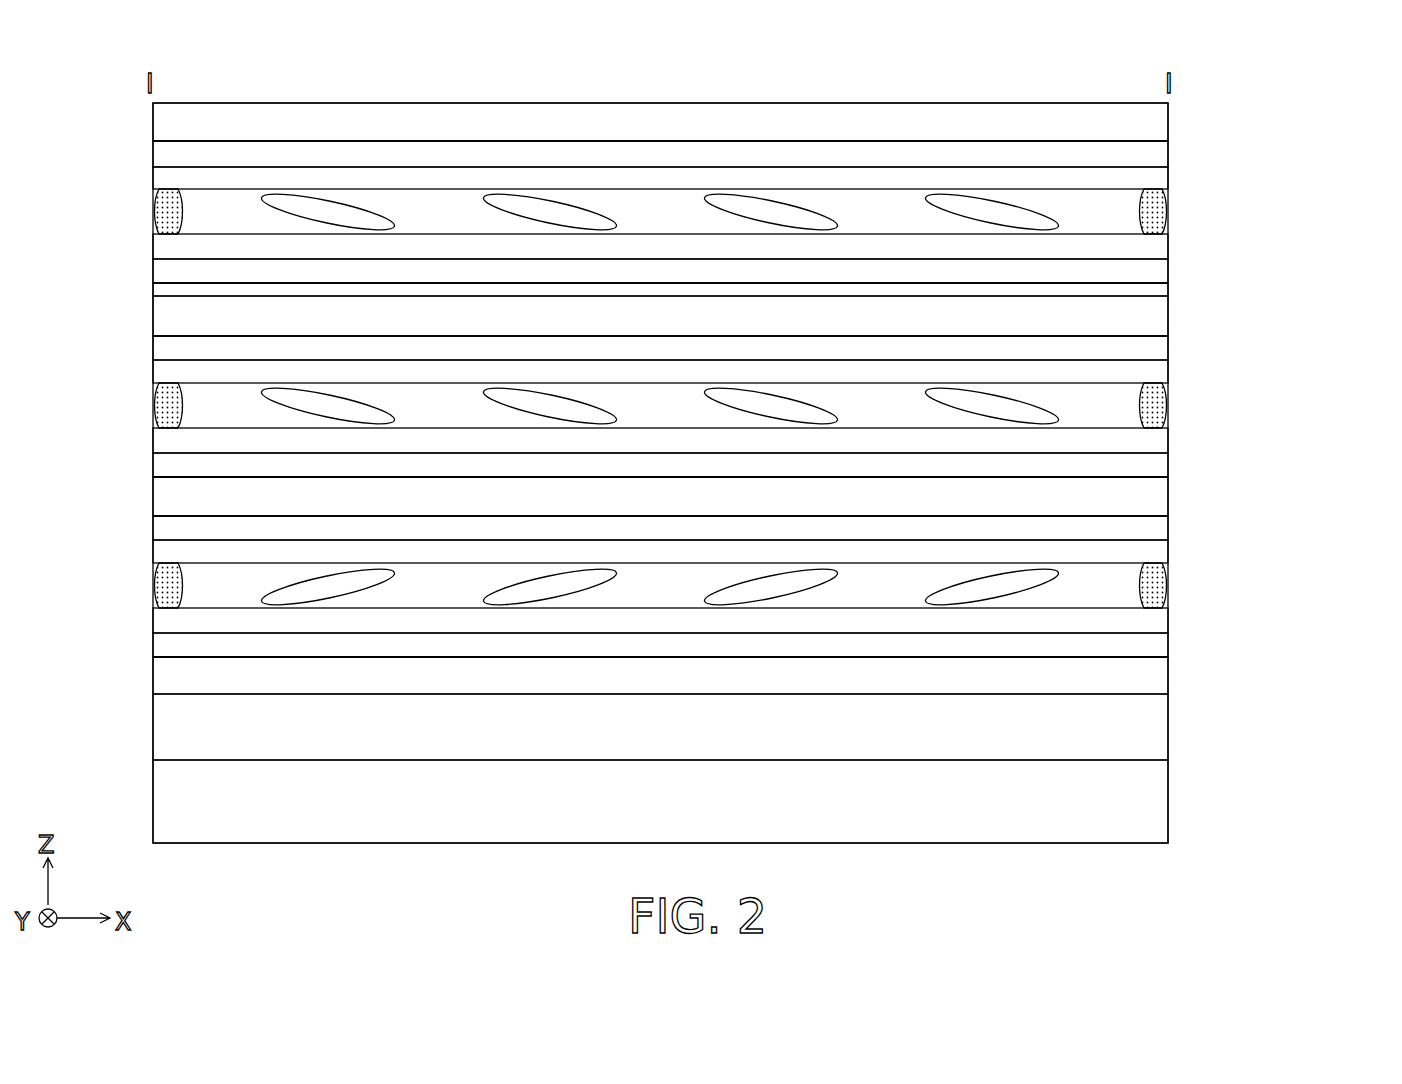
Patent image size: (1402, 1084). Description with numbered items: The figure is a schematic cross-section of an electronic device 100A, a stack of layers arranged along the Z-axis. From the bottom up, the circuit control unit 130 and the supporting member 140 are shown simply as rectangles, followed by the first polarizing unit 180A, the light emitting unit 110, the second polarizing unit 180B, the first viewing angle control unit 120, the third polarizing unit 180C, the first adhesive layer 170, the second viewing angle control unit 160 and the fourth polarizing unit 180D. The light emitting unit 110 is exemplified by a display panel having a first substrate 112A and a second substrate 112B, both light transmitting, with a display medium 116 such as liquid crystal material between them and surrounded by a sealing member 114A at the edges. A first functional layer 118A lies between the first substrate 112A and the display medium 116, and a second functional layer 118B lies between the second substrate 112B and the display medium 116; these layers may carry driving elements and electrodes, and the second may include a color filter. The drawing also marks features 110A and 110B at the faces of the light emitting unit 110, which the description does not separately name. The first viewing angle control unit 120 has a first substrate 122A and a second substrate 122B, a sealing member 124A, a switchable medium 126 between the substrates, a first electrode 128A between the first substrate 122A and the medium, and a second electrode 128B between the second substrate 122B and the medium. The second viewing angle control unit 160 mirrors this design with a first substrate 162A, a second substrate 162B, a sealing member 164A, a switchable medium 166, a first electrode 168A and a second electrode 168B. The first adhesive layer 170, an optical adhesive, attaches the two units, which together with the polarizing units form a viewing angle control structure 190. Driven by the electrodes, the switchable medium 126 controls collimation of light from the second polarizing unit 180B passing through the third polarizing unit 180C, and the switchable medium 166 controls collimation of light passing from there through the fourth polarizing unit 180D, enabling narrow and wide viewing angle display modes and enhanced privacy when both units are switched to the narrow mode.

The electronic device 100A is at (1274, 865).
The light emitting unit 110 is at (137, 516).
The first surface of first liquid crystal cell 110A is at (211, 462).
The second surface of first liquid crystal cell 110B is at (215, 673).
The first substrate 112A is at (1153, 644).
The second substrate 112B is at (1153, 526).
The spacer 114A is at (1163, 585).
The display medium 116 is at (1122, 596).
The first functional layer 118A is at (1152, 620).
The second functional layer 118B is at (1153, 551).
The first viewing angle control unit 120 is at (1272, 327).
The first substrate 122A is at (1153, 466).
The second substrate 122B is at (1153, 348).
The sealing member 124A is at (1163, 402).
The switchable medium 126 is at (1125, 417).
The first electrode 128A is at (1153, 441).
The second electrode 128B is at (1153, 372).
The circuit control unit 130 is at (168, 803).
The supporting member 140 is at (168, 728).
The second viewing angle control unit 160 is at (1272, 112).
The first substrate 162A is at (1150, 272).
The second substrate 162B is at (1152, 153).
The sealing member 164A is at (1163, 203).
The switchable medium 166 is at (1120, 214).
The first electrode 168A is at (1150, 247).
The second electrode 168B is at (1152, 178).
The first adhesive layer 170 is at (1153, 290).
The first polarizing unit 180A is at (1153, 676).
The second polarizing unit 180B is at (1153, 495).
The third polarizing unit 180C is at (1152, 316).
The fourth polarizing unit 180D is at (1152, 123).
The viewing angle control structure 190 is at (1333, 112).